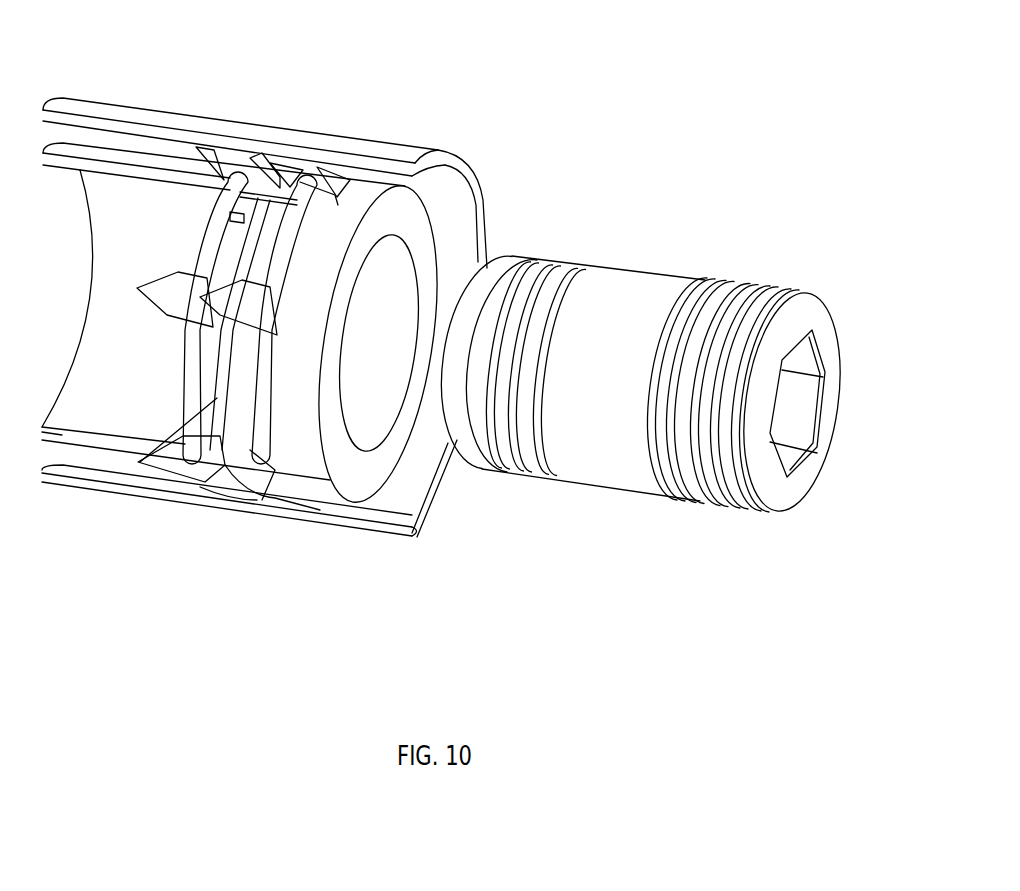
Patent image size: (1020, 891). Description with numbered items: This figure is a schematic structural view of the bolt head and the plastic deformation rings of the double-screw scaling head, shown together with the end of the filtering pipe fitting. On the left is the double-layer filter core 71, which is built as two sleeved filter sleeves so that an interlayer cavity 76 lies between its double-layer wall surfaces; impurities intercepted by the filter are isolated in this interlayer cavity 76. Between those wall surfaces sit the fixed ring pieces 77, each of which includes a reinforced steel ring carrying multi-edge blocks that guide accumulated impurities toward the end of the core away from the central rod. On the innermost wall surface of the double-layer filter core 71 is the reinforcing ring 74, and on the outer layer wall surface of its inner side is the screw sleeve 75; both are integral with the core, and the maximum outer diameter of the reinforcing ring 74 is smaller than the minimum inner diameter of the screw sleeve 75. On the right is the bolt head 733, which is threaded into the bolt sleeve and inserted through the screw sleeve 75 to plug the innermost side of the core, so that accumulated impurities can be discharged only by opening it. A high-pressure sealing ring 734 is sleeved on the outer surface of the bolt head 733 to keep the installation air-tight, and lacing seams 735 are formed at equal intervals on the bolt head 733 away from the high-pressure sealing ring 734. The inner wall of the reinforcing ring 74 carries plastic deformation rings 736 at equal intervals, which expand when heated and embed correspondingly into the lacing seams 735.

The double-layer filter core 71 is at (137, 197).
The fixed ring pieces 77 is at (247, 155).
The reinforcing ring 74 is at (326, 195).
The plastic deformation rings 736 is at (178, 423).
The interlayer cavity 76 is at (440, 203).
The screw sleeve 75 is at (333, 487).
The bolt head 733 is at (622, 266).
The lacing seams 735 is at (543, 480).
The high-pressure sealing ring 734 is at (697, 497).